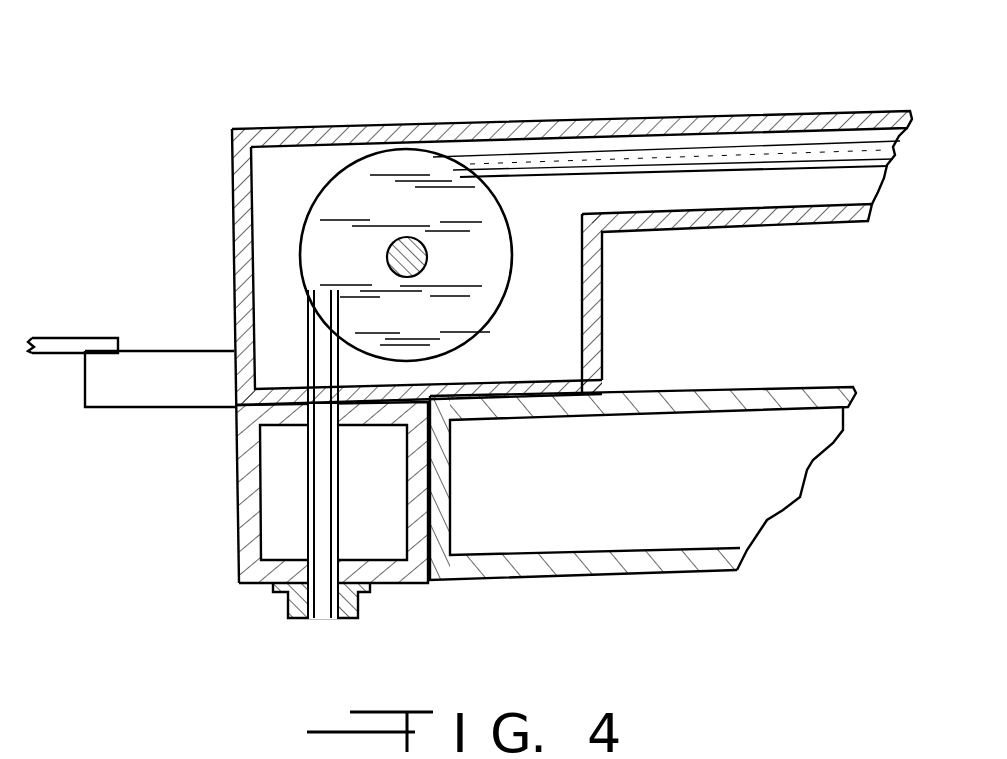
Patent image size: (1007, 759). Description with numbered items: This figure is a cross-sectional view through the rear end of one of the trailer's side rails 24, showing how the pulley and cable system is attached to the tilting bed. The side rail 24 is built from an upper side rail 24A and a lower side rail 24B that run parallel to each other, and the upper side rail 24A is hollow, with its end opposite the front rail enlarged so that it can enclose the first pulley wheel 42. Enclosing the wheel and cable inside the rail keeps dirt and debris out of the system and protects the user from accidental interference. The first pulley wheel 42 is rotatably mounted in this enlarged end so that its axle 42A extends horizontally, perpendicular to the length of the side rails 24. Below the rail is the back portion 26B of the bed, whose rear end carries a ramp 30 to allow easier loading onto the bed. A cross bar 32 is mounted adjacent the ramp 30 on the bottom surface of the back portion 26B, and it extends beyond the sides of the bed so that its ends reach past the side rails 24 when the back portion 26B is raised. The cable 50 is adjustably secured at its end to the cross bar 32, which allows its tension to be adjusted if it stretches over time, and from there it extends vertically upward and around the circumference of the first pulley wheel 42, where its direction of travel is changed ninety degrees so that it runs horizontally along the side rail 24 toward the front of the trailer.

The side rail 24 is at (233, 215).
The upper side rail 24A is at (750, 112).
The lower side rail 24B is at (733, 392).
The back portion of the bed 26B is at (155, 348).
The ramp 30 is at (48, 335).
The cross bar 32 is at (238, 508).
The first pulley wheel 42 is at (372, 183).
The axle 42A is at (407, 237).
The cable 50 is at (608, 153).